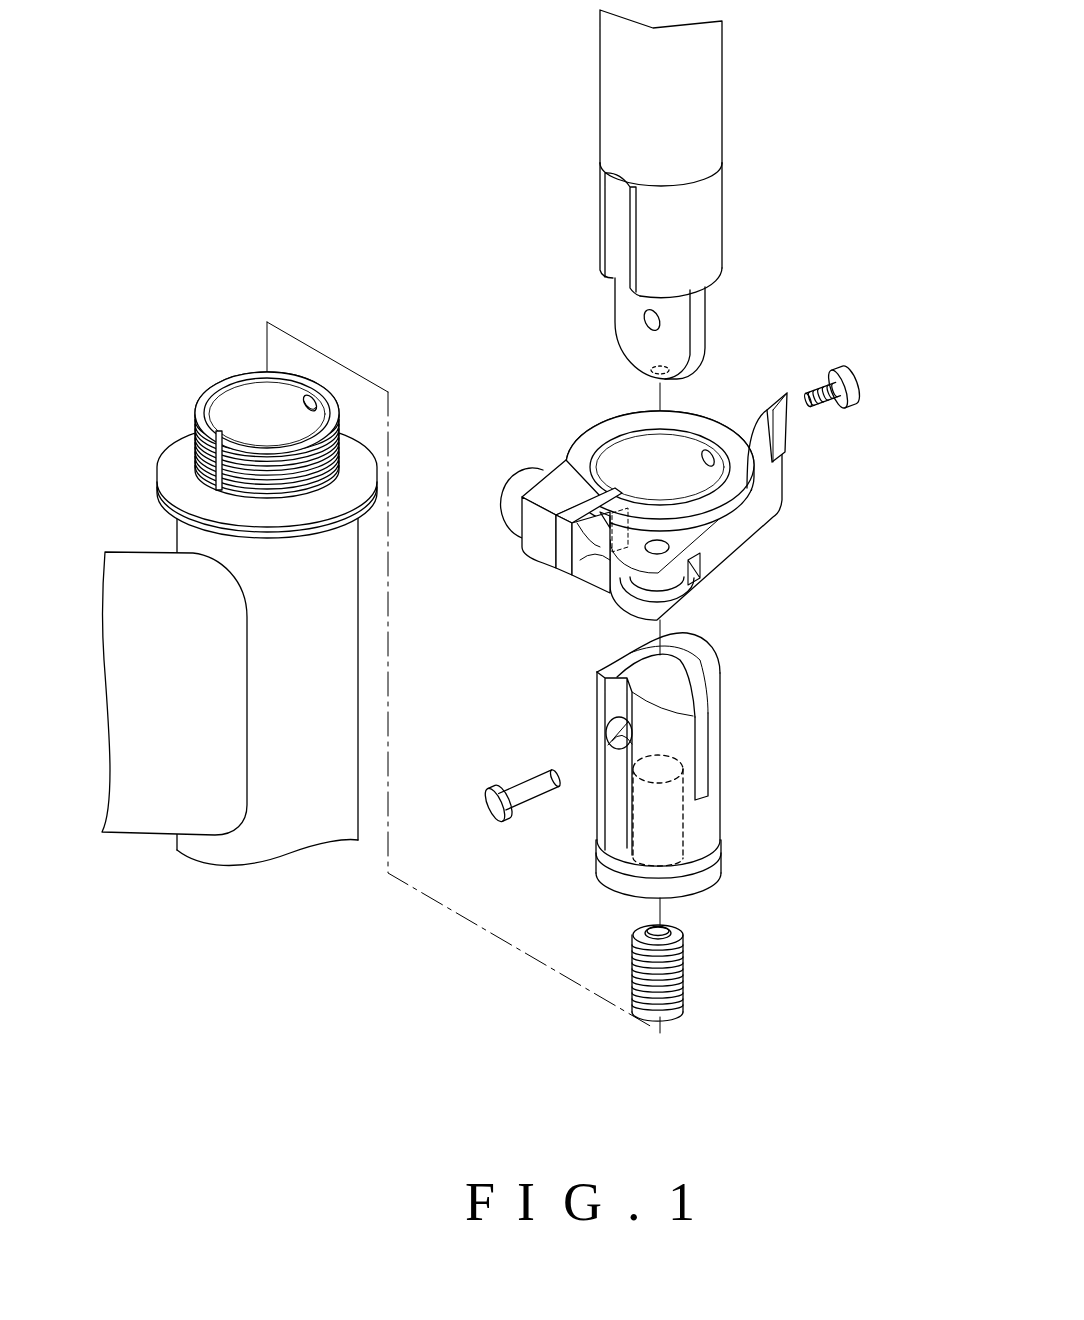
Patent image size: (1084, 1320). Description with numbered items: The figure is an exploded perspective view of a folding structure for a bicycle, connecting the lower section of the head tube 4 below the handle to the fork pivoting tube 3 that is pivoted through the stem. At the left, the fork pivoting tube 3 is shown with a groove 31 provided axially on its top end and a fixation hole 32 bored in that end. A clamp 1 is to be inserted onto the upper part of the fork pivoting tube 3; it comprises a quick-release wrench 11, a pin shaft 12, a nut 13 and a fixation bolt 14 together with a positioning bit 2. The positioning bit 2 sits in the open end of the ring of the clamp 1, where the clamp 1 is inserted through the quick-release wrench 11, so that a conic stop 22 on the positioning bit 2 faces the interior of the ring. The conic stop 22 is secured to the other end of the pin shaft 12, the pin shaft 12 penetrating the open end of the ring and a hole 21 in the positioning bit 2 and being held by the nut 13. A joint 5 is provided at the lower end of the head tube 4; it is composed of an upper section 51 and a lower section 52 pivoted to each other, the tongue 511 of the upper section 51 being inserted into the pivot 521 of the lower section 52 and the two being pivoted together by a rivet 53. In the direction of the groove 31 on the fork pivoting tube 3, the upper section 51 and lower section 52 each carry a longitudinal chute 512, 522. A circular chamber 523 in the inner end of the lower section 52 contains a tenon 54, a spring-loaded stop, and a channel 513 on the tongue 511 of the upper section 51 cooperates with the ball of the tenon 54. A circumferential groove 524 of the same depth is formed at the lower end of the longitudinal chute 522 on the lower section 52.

The clamp 1 is at (620, 519).
The positioning bit 2 is at (530, 575).
The fork pivoting tube 3 is at (244, 405).
The head tube 4 is at (715, 90).
The joint 5 is at (736, 537).
The quick-release wrench 11 is at (737, 540).
The pin shaft 12 is at (595, 558).
The nut 13 is at (518, 498).
The fixation bolt 14 is at (810, 393).
The hole 21 is at (552, 575).
The conic stop 22 is at (617, 545).
The groove 31 is at (200, 422).
The fixation hole 32 is at (313, 397).
The upper section 51 is at (712, 271).
The lower section 52 is at (694, 768).
The rivet 53 is at (523, 793).
The tenon 54 is at (665, 982).
The tongue 511 is at (693, 303).
The longitudinal chute 512 is at (617, 231).
The channel 513 is at (640, 352).
The pivot 521 is at (716, 732).
The longitudinal chute 522 is at (612, 805).
The circular chamber 523 is at (670, 825).
The circumferential groove 524 is at (697, 870).